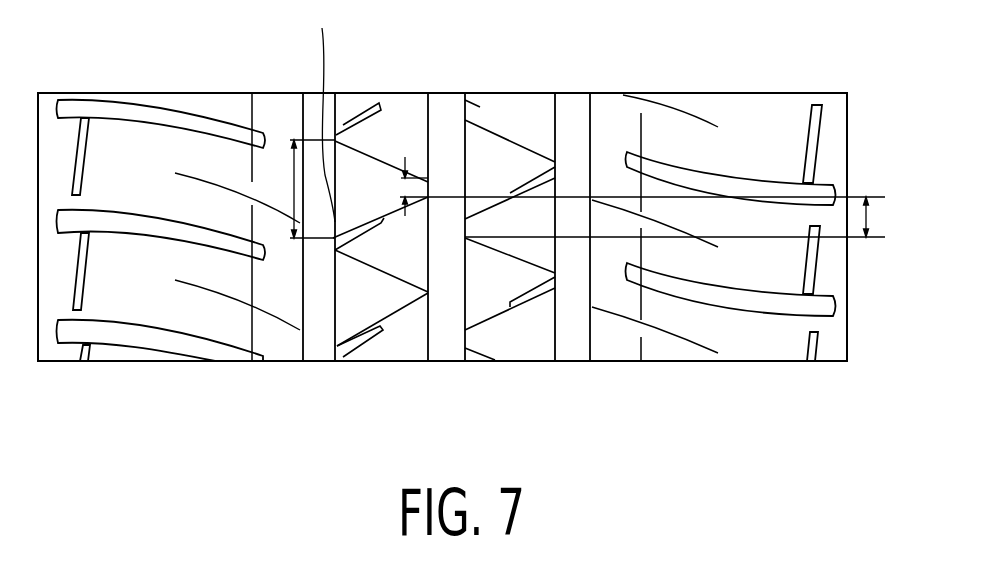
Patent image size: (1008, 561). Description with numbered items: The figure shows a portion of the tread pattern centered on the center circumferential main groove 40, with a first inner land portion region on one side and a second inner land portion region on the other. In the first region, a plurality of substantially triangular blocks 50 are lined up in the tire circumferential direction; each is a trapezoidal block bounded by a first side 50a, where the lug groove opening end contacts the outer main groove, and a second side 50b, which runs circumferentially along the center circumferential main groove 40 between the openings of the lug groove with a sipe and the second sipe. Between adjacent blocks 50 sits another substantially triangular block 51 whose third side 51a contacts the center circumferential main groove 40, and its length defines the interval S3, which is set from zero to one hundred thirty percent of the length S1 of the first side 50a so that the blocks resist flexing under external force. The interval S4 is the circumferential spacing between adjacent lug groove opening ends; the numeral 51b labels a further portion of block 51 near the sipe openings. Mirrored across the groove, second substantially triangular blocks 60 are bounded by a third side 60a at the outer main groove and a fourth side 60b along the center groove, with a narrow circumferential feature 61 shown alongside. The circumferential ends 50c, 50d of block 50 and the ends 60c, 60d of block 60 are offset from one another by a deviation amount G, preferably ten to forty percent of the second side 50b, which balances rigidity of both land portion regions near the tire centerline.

The center circumferential main groove 40 is at (443, 227).
The substantially triangular block 50 is at (383, 248).
The first side 50a is at (335, 222).
The second side 50b is at (428, 250).
The end of the first substantially triangular block 50c is at (437, 196).
The end of the first substantially triangular block 50d is at (428, 300).
The other substantially triangular block 51 is at (343, 124).
The third side 51a is at (428, 196).
The sipe end portion 51b is at (292, 98).
The second substantially triangular block 60 is at (498, 273).
The third side 60a is at (551, 158).
The fourth side 60b is at (468, 177).
The end of the second substantially triangular block 60c is at (465, 233).
The end of the second substantially triangular block 60d is at (465, 333).
The circumferential narrow groove 61 is at (573, 190).
The length of the opening end S1 is at (322, 114).
The interval S3 is at (415, 187).
The interval between opening ends S4 is at (299, 189).
The deviation amount G is at (675, 217).